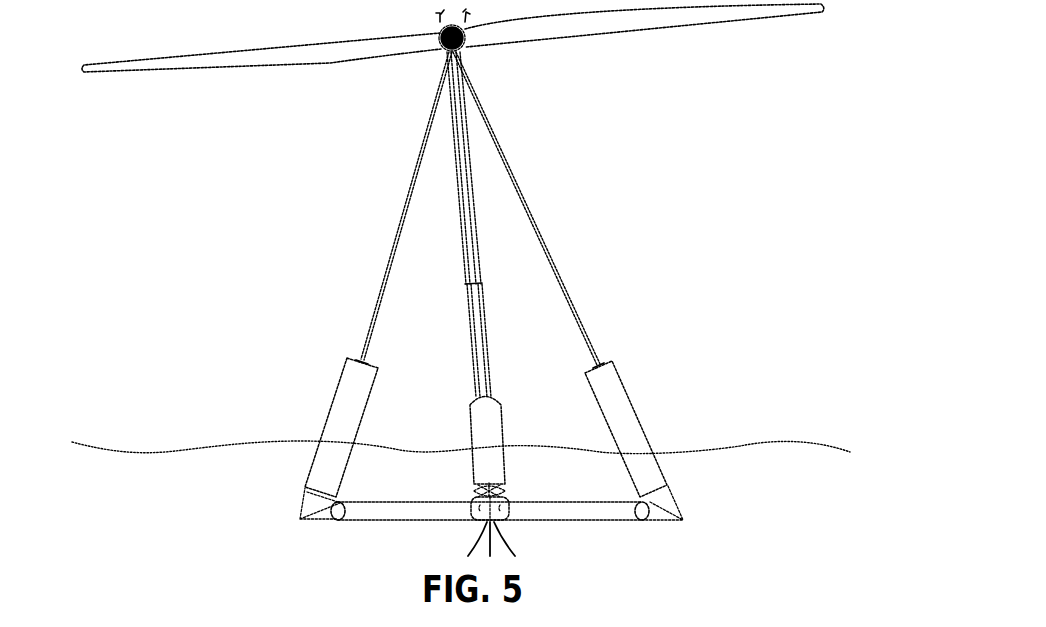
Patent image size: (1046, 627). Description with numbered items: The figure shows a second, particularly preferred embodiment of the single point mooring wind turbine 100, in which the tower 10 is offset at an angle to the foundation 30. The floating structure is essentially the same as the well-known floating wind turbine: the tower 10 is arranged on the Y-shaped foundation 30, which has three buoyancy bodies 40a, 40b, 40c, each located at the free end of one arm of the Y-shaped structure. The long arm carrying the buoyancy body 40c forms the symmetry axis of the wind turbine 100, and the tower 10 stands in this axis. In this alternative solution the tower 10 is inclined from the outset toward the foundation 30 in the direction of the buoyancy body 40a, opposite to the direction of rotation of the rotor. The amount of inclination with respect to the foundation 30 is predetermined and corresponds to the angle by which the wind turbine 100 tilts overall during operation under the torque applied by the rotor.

The tower 10 is at (462, 139).
The single point mooring wind turbine 100 is at (222, 224).
The foundation 30 is at (365, 516).
The buoyancy body 40a is at (330, 465).
The buoyancy body 40b is at (628, 408).
The buoyancy body 40c is at (502, 462).